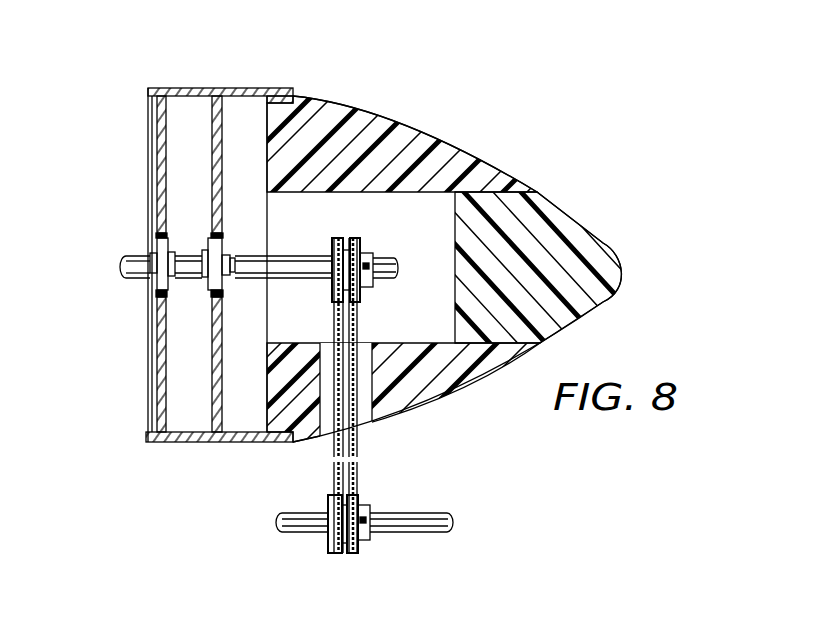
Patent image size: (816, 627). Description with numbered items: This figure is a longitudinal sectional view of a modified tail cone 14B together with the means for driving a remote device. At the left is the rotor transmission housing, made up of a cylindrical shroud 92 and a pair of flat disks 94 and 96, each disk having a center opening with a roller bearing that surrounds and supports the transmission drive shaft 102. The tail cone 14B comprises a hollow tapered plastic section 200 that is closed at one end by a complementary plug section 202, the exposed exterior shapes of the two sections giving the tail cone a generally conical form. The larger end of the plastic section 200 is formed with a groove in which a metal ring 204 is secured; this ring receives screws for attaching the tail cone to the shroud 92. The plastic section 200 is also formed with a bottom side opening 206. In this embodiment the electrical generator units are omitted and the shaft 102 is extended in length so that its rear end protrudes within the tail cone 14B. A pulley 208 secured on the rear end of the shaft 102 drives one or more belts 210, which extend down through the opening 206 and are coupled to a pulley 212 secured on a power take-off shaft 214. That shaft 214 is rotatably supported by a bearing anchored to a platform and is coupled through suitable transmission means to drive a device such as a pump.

The cylindrical shroud 92 is at (194, 88).
The flat disk 94 is at (162, 118).
The flat disk 96 is at (217, 140).
The transmission drive shaft 102 is at (132, 256).
The tail cone 14B is at (509, 163).
The metal ring 204 is at (283, 112).
The hollow tapered plastic section 200 is at (408, 135).
The plug section 202 is at (583, 232).
The bottom side opening 206 is at (376, 408).
The pulley 208 is at (360, 240).
The belts 210 is at (352, 325).
The pulley 212 is at (362, 498).
The power take-off shaft 214 is at (300, 520).